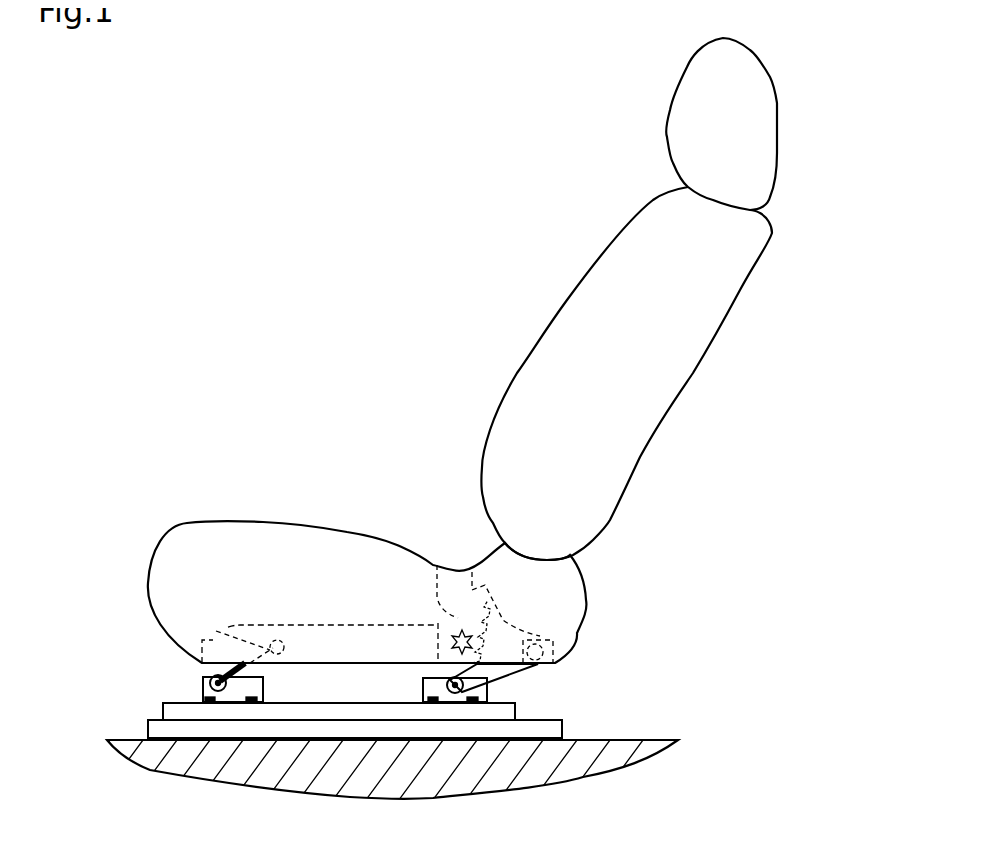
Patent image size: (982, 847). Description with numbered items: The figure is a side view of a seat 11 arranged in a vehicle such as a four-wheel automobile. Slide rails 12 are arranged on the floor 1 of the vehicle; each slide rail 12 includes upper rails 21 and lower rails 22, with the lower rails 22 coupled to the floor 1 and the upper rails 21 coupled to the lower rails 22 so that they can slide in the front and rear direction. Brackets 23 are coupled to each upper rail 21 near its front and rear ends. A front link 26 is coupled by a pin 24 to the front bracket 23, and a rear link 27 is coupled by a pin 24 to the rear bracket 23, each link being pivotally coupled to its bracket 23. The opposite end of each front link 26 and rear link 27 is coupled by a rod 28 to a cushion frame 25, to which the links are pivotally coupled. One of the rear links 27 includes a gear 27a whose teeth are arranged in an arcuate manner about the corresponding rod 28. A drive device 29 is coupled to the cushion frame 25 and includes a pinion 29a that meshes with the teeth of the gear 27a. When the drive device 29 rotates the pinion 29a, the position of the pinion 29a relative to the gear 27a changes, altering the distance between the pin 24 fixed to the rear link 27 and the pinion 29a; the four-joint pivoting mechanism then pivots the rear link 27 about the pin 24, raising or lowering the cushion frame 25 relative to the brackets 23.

The floor 1 is at (648, 740).
The seat 11 is at (395, 382).
The slide rail 12 is at (297, 704).
The upper rail 21 is at (160, 700).
The lower rail 22 is at (322, 718).
The bracket 23 is at (267, 683).
The pin 24 is at (228, 702).
The cushion frame 25 is at (318, 623).
The front link 26 is at (215, 633).
The rear link 27 is at (508, 675).
The gear 27a is at (472, 572).
The rod 28 is at (272, 637).
The drive device 29 is at (435, 563).
The pinion 29a is at (457, 618).